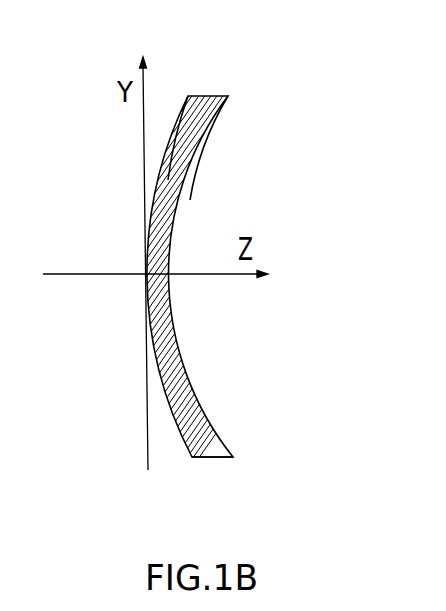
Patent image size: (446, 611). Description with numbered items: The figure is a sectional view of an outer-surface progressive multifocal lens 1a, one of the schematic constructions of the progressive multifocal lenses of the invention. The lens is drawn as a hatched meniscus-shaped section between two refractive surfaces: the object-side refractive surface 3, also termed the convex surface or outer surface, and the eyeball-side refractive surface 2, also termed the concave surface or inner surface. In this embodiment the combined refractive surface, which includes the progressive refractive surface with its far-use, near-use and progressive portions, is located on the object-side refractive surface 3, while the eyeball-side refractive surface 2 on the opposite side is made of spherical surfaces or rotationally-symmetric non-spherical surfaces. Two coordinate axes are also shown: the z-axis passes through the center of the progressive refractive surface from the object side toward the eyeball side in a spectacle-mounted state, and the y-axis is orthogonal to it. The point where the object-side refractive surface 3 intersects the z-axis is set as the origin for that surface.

The outer-surface progressive multifocal lens 1a is at (263, 148).
The eyeball-side refractive surface 2 is at (197, 152).
The object-side refractive surface 3 is at (181, 115).